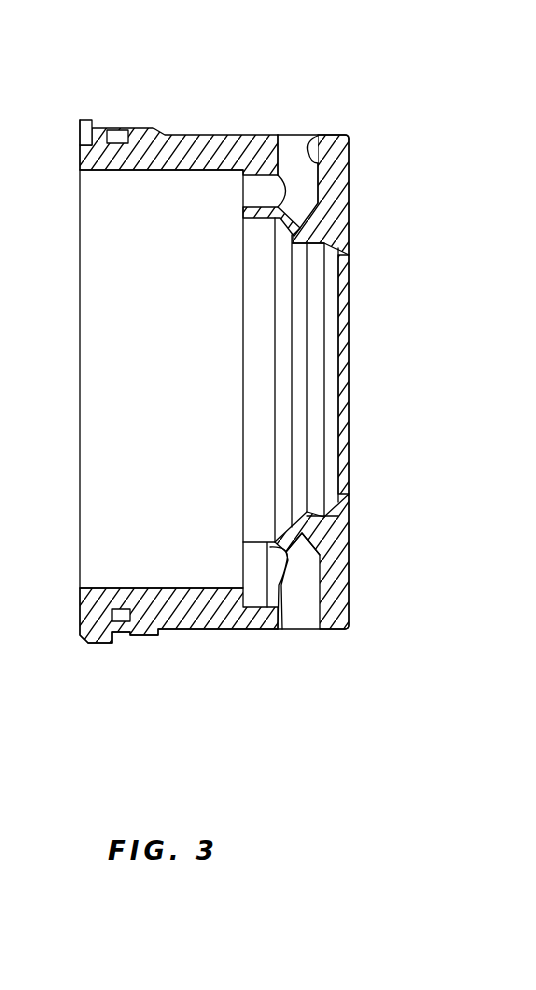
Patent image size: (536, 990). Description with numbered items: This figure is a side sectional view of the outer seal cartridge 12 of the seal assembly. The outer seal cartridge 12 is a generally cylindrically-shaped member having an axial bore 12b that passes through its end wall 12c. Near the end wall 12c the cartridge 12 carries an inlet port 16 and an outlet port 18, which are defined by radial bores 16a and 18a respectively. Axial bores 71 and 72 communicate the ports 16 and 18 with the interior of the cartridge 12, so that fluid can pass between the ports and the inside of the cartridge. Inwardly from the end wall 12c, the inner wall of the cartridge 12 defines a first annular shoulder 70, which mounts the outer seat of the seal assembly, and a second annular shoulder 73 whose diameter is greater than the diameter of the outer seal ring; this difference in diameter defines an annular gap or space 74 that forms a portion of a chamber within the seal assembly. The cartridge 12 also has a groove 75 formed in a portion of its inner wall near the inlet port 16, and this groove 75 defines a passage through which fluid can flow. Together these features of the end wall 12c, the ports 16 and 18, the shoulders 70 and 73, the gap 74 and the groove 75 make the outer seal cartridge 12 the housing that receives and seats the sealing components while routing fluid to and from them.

The outer seal cartridge 12 is at (216, 133).
The axial bore 12b is at (344, 362).
The end wall 12c is at (345, 249).
The inlet port 16 is at (285, 618).
The radial bore 16a is at (316, 628).
The outlet port 18 is at (291, 134).
The radial bore 18a is at (314, 148).
The first annular shoulder 70 is at (345, 432).
The axial bore 71 is at (260, 564).
The axial bore 72 is at (258, 189).
The second annular shoulder 73 is at (247, 226).
The annular gap 74 is at (250, 550).
The groove 75 is at (122, 612).